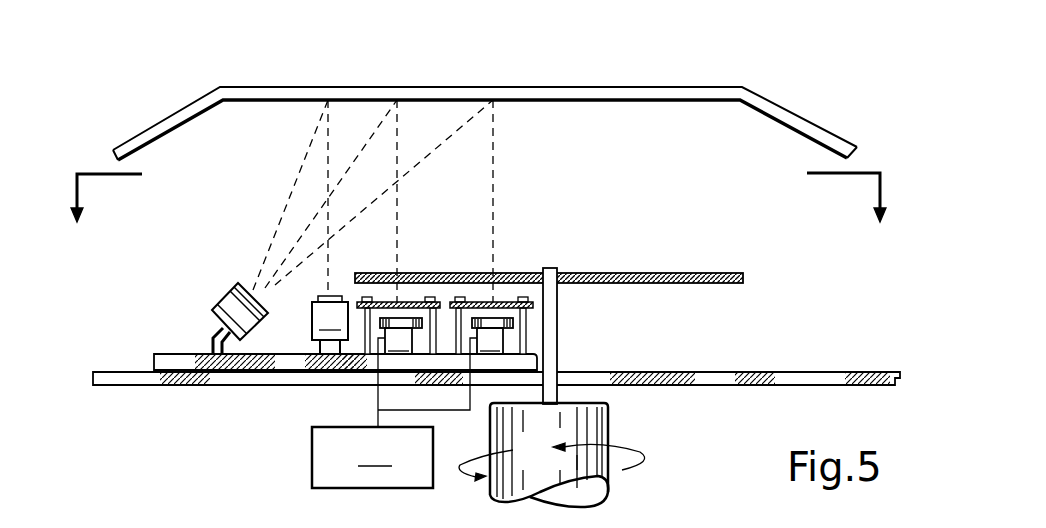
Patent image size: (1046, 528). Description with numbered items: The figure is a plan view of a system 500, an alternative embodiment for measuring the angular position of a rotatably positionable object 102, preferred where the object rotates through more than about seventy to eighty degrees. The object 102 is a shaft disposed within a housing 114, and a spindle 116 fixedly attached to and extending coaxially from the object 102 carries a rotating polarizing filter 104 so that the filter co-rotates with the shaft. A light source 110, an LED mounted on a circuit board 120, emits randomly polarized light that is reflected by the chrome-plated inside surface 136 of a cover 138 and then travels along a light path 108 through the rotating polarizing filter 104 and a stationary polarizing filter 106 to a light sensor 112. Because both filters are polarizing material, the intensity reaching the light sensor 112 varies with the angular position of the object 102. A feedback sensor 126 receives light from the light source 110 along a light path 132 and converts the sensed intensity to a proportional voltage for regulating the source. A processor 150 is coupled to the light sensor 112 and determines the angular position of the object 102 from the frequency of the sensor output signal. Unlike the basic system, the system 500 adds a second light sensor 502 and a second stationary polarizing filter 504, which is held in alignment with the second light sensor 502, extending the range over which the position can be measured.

The system 500 is at (204, 66).
The rotatably positionable object 102 is at (610, 422).
The rotating polarizing filter 104 is at (676, 273).
The stationary polarizing filter 106 is at (478, 300).
The light path 108 is at (493, 170).
The light source 110 is at (222, 298).
The light sensor 112 is at (445, 364).
The housing 114 is at (785, 372).
The spindle 116 is at (560, 338).
The circuit board 120 is at (182, 357).
The feedback sensor 126 is at (330, 325).
The light path 132 is at (306, 153).
The inside surface 136 is at (566, 102).
The cover 138 is at (633, 96).
The processor 150 is at (372, 457).
The second light sensor 502 is at (400, 372).
The second stationary polarizing filter 504 is at (356, 302).